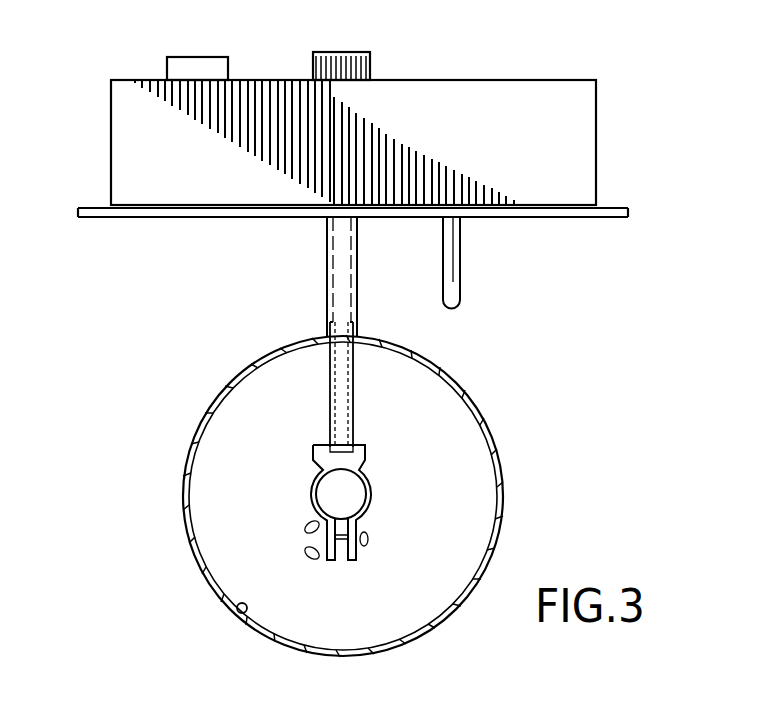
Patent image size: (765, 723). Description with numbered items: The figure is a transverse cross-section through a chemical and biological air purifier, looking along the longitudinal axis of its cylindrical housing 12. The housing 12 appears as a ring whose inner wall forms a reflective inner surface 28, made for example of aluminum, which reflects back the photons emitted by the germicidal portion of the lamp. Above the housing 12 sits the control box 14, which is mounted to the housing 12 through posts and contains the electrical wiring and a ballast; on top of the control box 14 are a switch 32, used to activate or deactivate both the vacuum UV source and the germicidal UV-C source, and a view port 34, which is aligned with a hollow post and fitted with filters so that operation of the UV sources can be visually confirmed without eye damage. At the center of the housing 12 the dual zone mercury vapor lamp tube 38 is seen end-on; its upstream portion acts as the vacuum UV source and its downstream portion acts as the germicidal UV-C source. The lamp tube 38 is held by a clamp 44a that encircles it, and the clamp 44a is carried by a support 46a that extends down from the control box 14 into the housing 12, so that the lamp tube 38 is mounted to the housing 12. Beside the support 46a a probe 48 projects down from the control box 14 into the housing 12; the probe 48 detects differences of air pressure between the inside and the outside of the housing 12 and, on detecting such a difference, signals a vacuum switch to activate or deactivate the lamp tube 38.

The housing 12 is at (182, 480).
The control box 14 is at (111, 80).
The reflective inner surface 28 is at (241, 618).
The switch 32 is at (218, 68).
The view port 34 is at (367, 62).
The dual zone mercury vapor lamp tube 38 is at (330, 497).
The clamp 44a is at (373, 492).
The support 46a is at (332, 378).
The probe 48 is at (456, 302).